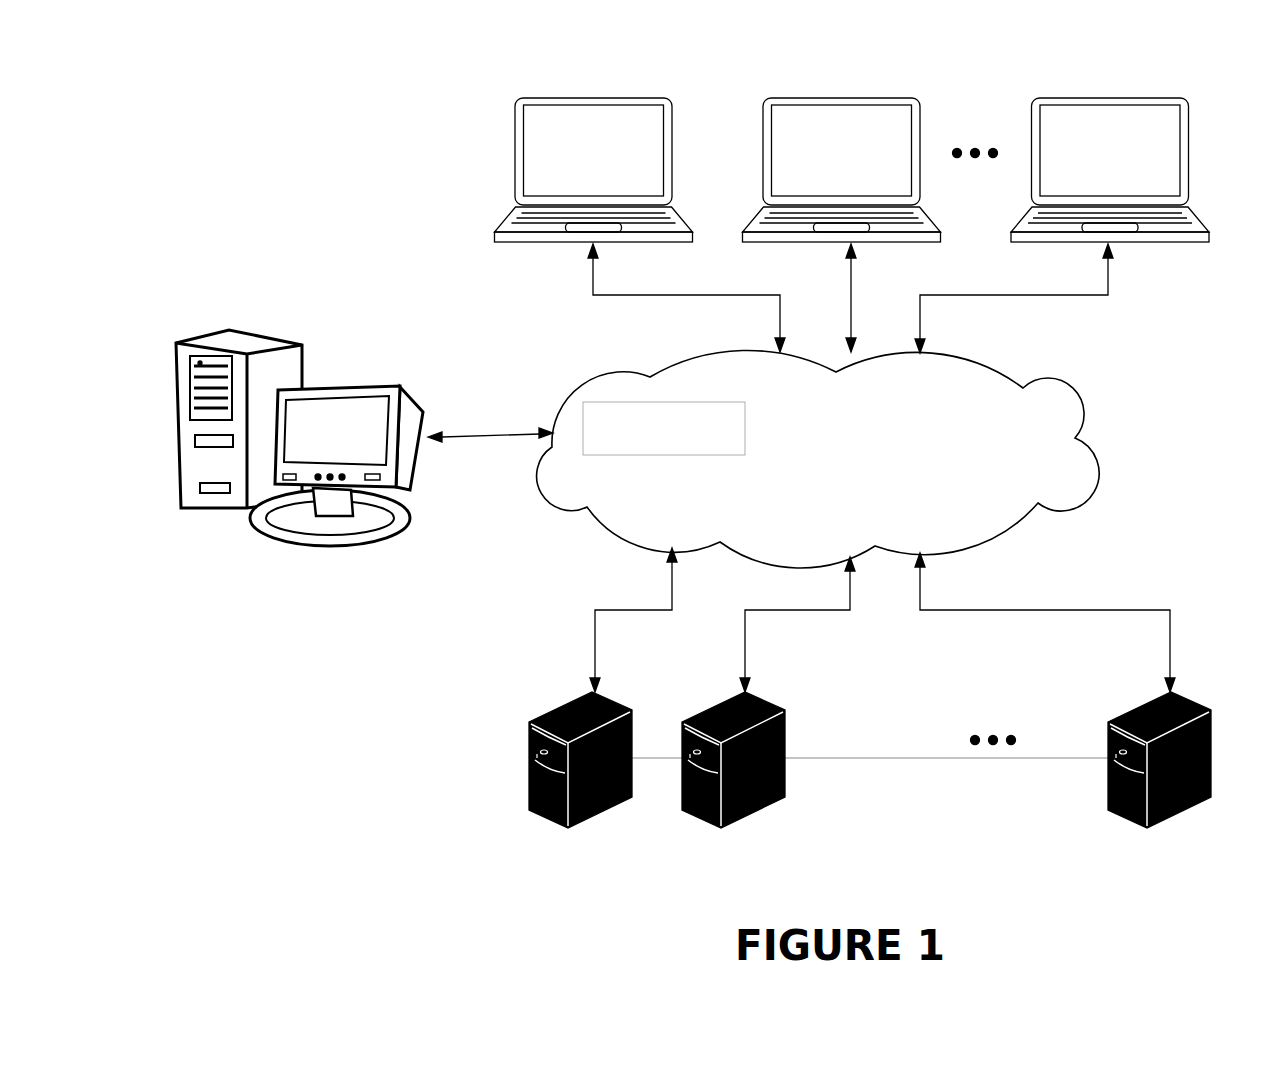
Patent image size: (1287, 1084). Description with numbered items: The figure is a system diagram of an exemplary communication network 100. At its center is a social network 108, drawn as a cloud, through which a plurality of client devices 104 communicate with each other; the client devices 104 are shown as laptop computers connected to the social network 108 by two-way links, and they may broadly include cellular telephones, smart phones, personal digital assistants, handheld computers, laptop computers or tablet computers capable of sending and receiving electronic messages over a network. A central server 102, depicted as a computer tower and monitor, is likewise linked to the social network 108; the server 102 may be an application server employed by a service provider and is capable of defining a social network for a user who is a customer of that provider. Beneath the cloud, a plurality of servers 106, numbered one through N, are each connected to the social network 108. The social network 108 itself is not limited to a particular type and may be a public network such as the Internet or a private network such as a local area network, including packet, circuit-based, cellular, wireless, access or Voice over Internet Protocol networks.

The communication network 100 is at (1071, 907).
The central server 102 is at (214, 499).
The client devices 104 is at (1107, 112).
The servers 106 is at (546, 828).
The social network 108 is at (818, 459).